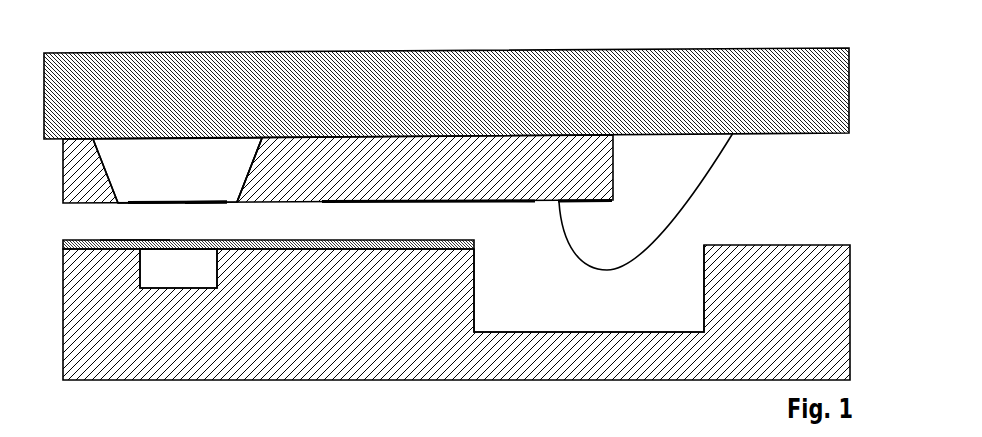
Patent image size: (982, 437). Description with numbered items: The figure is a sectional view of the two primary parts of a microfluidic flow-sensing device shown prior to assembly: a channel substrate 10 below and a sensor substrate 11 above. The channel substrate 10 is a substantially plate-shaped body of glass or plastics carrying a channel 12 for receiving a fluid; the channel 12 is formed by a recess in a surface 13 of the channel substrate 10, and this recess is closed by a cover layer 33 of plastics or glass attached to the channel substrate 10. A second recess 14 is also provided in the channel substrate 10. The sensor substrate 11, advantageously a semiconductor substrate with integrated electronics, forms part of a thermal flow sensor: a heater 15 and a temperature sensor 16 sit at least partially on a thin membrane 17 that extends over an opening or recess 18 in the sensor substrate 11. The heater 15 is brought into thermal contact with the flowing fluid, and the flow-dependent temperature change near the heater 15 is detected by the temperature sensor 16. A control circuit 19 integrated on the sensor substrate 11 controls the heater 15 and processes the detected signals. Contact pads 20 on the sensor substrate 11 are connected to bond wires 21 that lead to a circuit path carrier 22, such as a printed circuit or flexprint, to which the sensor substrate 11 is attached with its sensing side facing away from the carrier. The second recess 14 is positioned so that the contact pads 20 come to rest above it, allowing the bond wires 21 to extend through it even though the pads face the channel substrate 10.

The channel substrate 10 is at (378, 367).
The sensor substrate 11 is at (63, 185).
The channel 12 is at (190, 277).
The surface of the channel substrate 13 is at (78, 241).
The second recess 14 is at (594, 322).
The heater 15 is at (182, 206).
The temperature sensor 16 is at (197, 206).
The membrane 17 is at (233, 206).
The recess in sensor substrate 18 is at (201, 173).
The control circuit 19 is at (380, 203).
The contact pads 20 is at (547, 203).
The bond wires 21 is at (703, 185).
The circuit path carrier 22 is at (147, 62).
The cover layer 33 is at (135, 241).